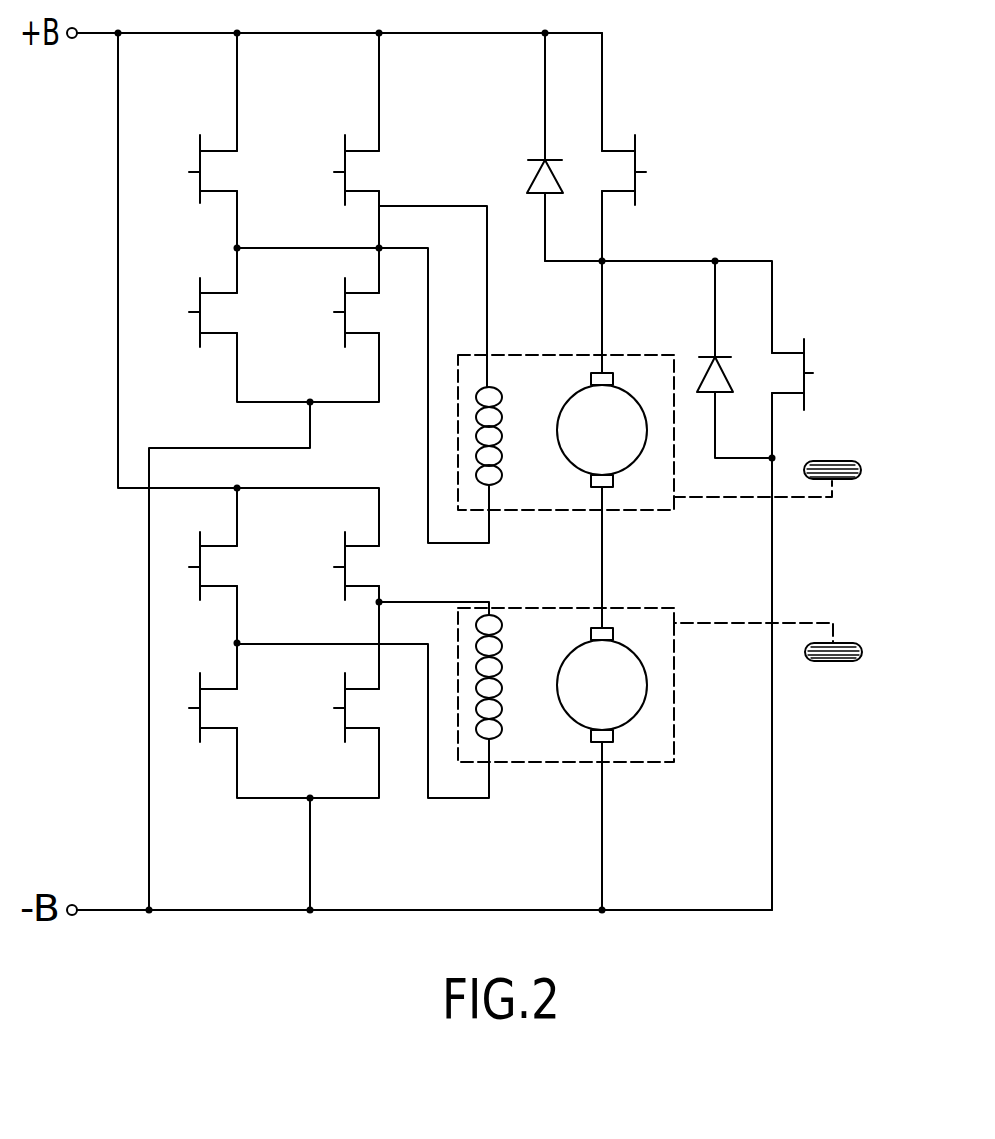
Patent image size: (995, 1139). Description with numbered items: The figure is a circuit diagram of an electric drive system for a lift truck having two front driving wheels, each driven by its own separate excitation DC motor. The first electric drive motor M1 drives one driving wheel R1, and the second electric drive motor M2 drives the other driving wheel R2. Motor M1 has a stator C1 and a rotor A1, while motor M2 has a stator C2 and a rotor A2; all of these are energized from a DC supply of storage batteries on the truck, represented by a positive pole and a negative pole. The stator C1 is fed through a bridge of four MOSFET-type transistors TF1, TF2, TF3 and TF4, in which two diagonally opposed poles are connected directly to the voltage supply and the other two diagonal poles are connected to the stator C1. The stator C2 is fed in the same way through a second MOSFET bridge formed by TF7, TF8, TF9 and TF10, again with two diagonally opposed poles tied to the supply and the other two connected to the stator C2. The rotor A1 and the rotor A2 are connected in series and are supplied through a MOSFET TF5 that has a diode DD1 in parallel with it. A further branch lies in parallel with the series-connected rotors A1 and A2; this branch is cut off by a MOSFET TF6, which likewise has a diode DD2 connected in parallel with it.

The MOSFET TF1 is at (326, 152).
The MOSFET TF2 is at (184, 325).
The MOSFET TF3 is at (190, 150).
The MOSFET TF4 is at (324, 327).
The MOSFET TF5 is at (656, 150).
The MOSFET TF6 is at (817, 333).
The MOSFET TF7 is at (323, 549).
The MOSFET TF8 is at (195, 748).
The MOSFET TF9 is at (190, 588).
The MOSFET TF10 is at (324, 716).
The diode DD1 is at (518, 162).
The diode DD2 is at (733, 333).
The stator C1 is at (501, 393).
The stator C2 is at (499, 735).
The electric drive motor M1 is at (645, 426).
The electric drive motor M2 is at (645, 689).
The rotor A1 is at (628, 455).
The rotor A2 is at (622, 670).
The driving wheel R1 is at (830, 462).
The driving wheel R2 is at (832, 661).